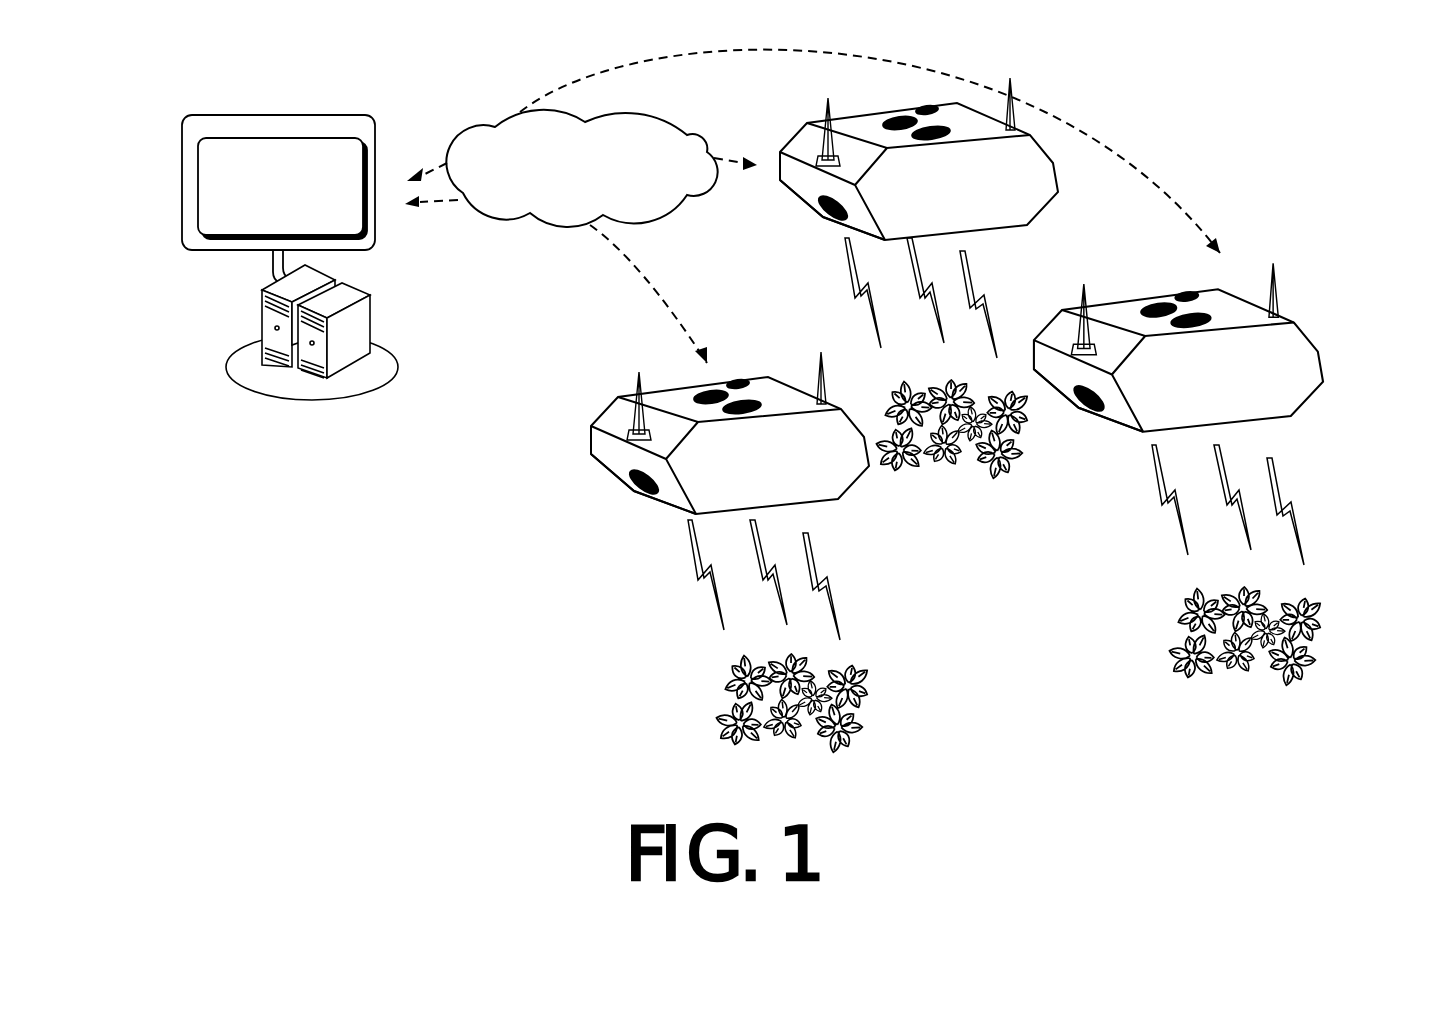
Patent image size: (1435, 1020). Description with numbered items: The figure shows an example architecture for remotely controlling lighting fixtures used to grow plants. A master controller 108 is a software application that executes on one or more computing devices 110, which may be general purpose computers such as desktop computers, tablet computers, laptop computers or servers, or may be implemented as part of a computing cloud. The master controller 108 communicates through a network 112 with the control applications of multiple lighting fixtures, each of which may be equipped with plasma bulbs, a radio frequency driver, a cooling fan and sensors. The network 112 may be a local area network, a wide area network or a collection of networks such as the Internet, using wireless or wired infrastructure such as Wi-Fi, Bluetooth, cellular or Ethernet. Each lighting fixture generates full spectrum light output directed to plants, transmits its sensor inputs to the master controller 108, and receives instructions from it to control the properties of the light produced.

The master controller 108 is at (263, 226).
The computing devices 110 is at (355, 285).
The network 112 is at (559, 193).